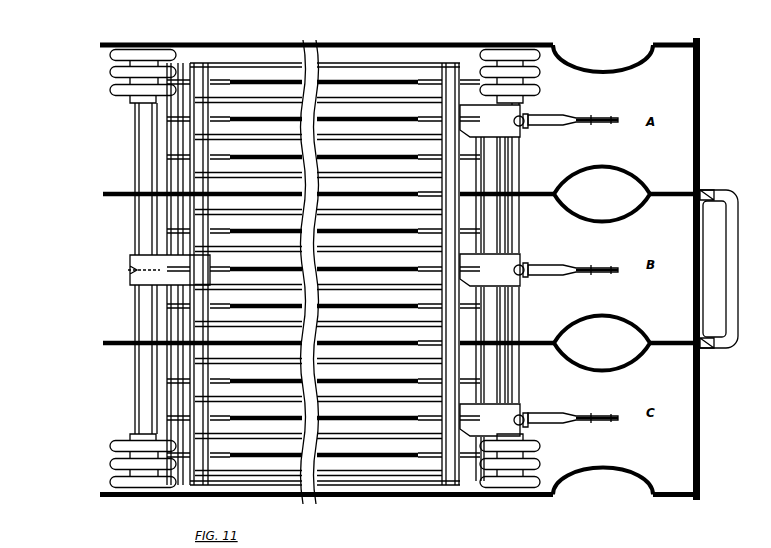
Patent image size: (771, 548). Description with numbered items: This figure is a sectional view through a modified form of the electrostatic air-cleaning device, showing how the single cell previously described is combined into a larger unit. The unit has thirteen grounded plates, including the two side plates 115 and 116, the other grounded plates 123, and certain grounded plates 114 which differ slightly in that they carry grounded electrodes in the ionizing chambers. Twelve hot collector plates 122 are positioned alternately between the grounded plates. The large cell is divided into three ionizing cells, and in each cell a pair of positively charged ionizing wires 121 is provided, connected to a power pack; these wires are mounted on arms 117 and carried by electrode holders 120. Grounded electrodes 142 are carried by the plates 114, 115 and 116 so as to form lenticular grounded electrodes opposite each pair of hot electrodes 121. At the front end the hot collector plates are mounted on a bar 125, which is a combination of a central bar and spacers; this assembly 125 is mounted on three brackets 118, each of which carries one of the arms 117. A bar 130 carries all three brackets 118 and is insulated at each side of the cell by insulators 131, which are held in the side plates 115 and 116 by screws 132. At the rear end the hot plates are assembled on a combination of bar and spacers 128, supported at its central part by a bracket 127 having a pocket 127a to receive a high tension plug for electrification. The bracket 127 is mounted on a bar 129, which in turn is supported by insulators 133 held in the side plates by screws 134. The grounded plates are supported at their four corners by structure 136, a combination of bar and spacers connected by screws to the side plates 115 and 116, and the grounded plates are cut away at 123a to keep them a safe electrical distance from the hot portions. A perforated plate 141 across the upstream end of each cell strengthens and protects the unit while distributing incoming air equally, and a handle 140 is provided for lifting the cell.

The grounded plates 114 is at (103, 196).
The side plate 115 is at (357, 44).
The side plate 116 is at (370, 497).
The arm 117 is at (548, 117).
The bracket 118 is at (494, 270).
The electrode holder 120 is at (600, 124).
The ionizing wires 121 is at (611, 115).
The hot collector plates 122 is at (262, 72).
The grounded plates 123 is at (366, 84).
The cut-away portions 123a is at (440, 119).
The bar 125 is at (443, 91).
The bracket 127 is at (170, 270).
The pocket 127a is at (128, 270).
The bar and spacers 128 is at (212, 91).
The bar 129 is at (135, 154).
The bar 130 is at (518, 167).
The insulators 131 is at (541, 73).
The screws 132 is at (506, 62).
The insulators 133 is at (110, 73).
The screws 134 is at (143, 65).
The bar and spacer structure 136 is at (181, 63).
The handle 140 is at (730, 190).
The perforated plate 141 is at (700, 95).
The grounded electrodes 142 is at (597, 69).